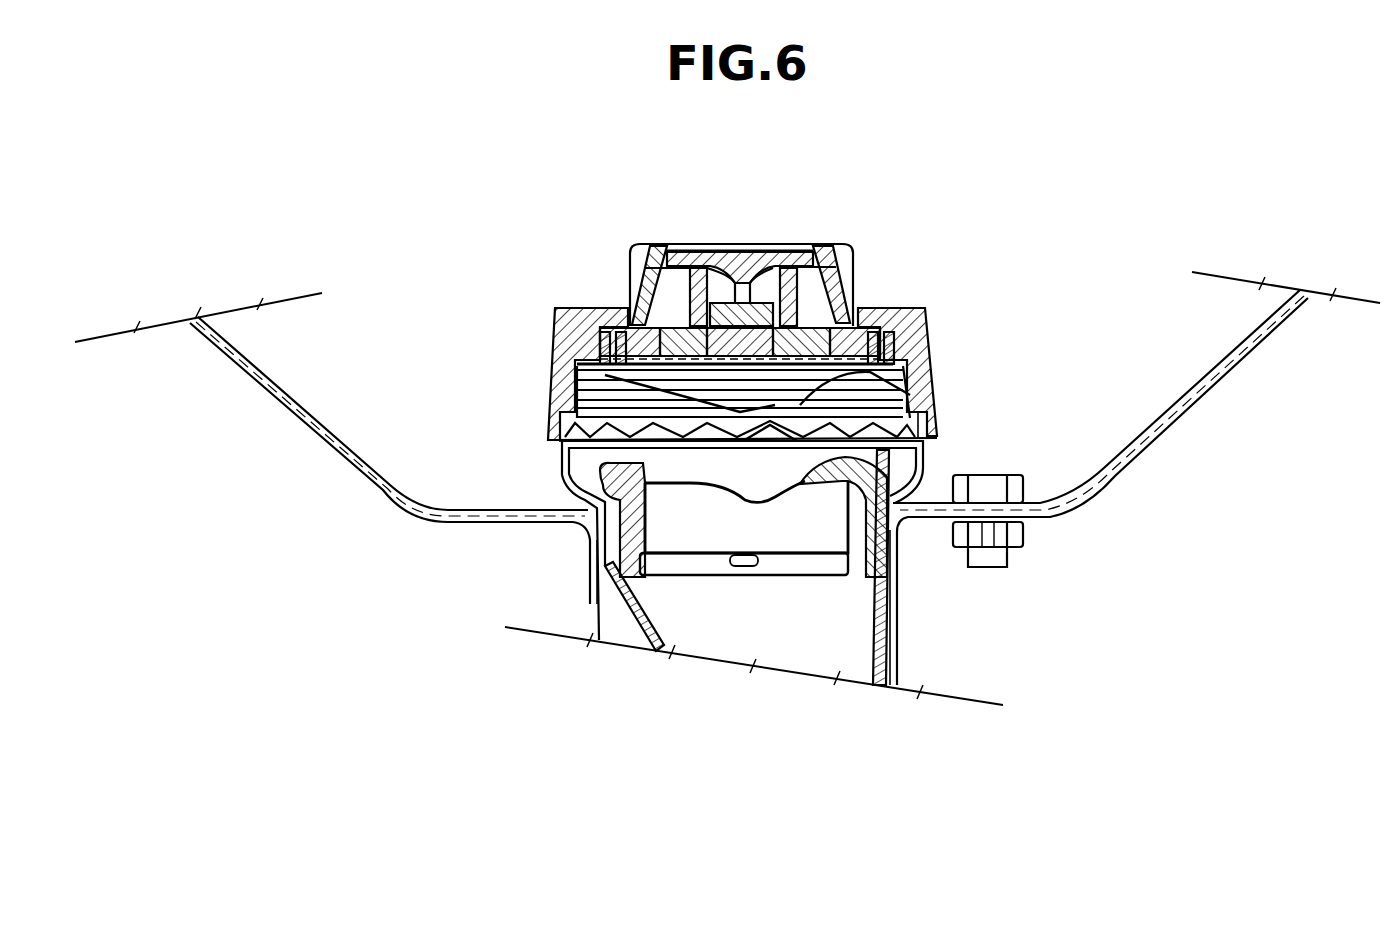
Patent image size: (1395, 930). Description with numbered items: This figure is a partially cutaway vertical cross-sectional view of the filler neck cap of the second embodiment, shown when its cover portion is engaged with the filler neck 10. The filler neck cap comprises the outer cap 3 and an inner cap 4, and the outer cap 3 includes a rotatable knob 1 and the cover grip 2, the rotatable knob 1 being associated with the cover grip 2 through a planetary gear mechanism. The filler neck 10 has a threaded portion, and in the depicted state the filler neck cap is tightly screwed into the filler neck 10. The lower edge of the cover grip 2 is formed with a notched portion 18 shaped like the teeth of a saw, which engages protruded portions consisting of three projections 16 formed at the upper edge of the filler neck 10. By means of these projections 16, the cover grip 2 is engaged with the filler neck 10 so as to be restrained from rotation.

The rotatable knob 1 is at (830, 246).
The cover grip 2 is at (557, 357).
The outer cap 3 is at (880, 264).
The inner cap 4 is at (598, 538).
The filler neck 10 is at (560, 468).
The projections 16 is at (910, 367).
The notched portion 18 is at (745, 425).